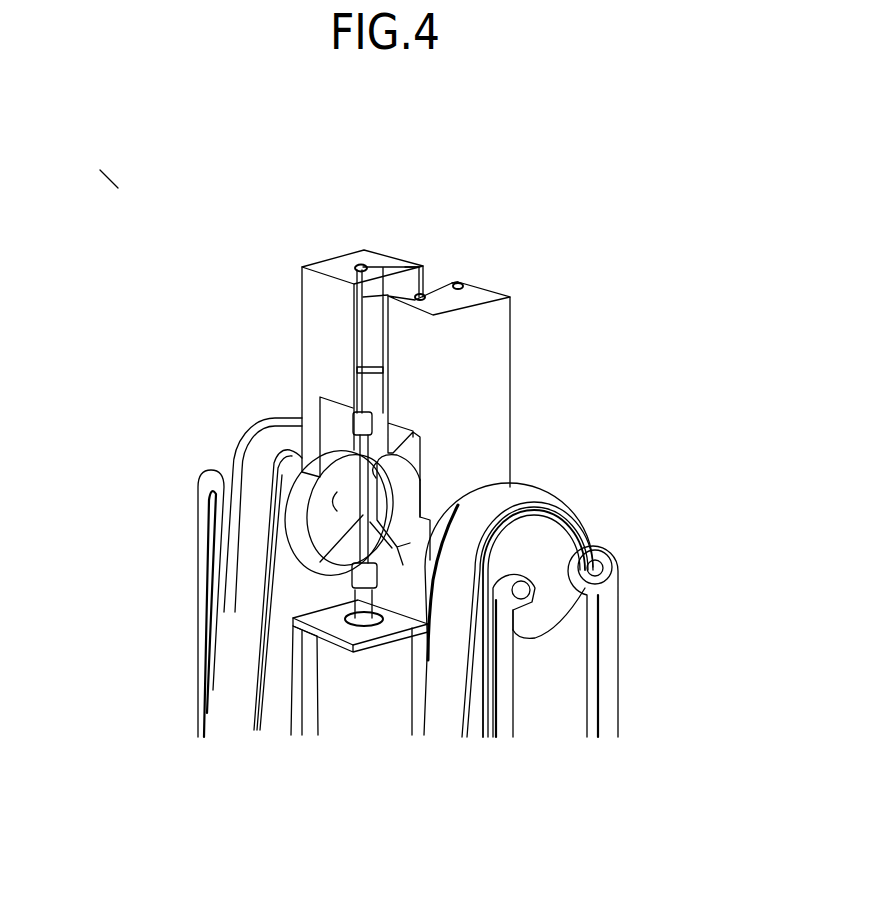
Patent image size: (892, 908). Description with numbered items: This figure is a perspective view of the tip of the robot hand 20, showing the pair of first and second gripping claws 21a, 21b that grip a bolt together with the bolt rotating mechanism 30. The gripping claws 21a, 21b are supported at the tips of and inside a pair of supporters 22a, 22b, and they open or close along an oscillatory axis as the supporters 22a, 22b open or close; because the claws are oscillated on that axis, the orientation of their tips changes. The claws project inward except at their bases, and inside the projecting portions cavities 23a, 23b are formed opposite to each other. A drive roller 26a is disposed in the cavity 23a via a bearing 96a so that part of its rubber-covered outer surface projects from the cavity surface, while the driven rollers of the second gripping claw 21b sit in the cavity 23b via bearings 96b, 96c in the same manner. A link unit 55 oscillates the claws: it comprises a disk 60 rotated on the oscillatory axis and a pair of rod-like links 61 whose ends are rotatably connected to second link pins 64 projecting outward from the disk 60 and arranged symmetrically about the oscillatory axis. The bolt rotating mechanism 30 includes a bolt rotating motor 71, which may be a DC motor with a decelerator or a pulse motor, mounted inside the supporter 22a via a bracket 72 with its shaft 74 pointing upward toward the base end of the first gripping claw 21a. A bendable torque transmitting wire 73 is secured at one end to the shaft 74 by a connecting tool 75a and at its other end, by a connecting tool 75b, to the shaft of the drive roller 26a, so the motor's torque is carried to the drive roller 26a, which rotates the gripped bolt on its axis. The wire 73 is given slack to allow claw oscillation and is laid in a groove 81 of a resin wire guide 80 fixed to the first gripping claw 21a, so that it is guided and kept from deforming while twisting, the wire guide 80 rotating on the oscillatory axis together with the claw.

The hand 20 is at (118, 188).
The first gripping claw 21a is at (312, 302).
The second gripping claw 21b is at (491, 382).
The supporter 22a is at (289, 422).
The supporter 22b is at (508, 502).
The cavity 23a is at (415, 272).
The cavity 23b is at (453, 283).
The drive roller 26a is at (368, 327).
The bolt rotating mechanism 30 is at (223, 690).
The link unit 55 is at (638, 652).
The disk 60 is at (553, 540).
The link 61 is at (203, 522).
The second link pin 64 is at (603, 565).
The bolt rotating motor 71 is at (382, 708).
The bracket 72 is at (327, 620).
The torque transmitting wire 73 is at (345, 536).
The shaft 74 is at (370, 626).
The connecting tool 75a is at (352, 582).
The connecting tool 75b is at (353, 424).
The wire guide 80 is at (320, 511).
The groove 81 is at (379, 482).
The bearing 96a is at (361, 266).
The bearing 96b is at (421, 296).
The bearing 96c is at (462, 286).